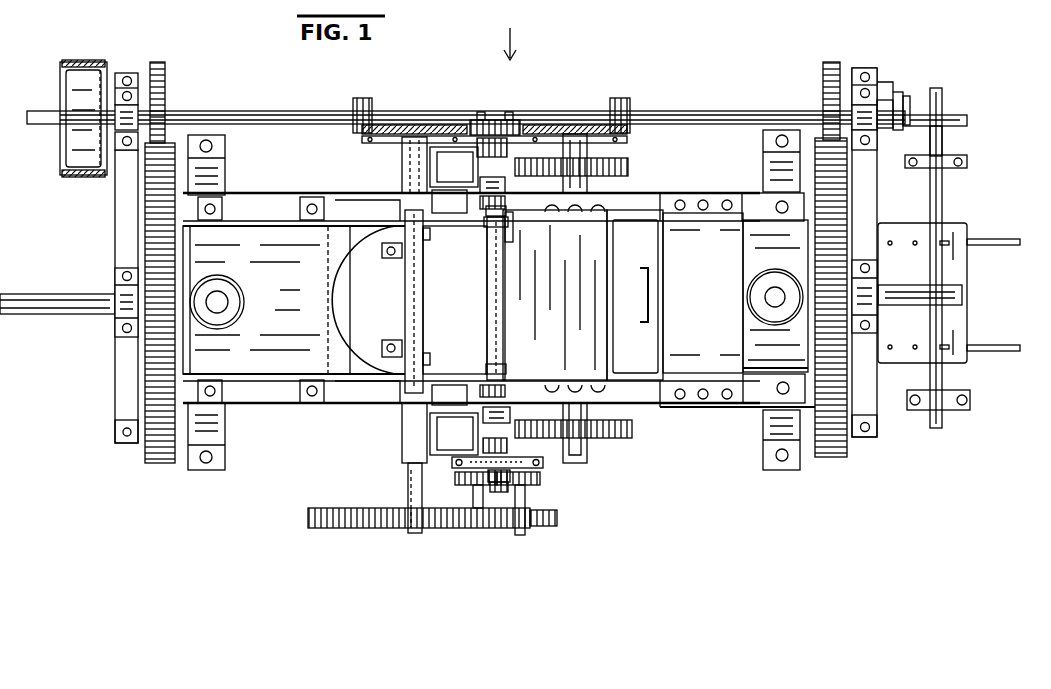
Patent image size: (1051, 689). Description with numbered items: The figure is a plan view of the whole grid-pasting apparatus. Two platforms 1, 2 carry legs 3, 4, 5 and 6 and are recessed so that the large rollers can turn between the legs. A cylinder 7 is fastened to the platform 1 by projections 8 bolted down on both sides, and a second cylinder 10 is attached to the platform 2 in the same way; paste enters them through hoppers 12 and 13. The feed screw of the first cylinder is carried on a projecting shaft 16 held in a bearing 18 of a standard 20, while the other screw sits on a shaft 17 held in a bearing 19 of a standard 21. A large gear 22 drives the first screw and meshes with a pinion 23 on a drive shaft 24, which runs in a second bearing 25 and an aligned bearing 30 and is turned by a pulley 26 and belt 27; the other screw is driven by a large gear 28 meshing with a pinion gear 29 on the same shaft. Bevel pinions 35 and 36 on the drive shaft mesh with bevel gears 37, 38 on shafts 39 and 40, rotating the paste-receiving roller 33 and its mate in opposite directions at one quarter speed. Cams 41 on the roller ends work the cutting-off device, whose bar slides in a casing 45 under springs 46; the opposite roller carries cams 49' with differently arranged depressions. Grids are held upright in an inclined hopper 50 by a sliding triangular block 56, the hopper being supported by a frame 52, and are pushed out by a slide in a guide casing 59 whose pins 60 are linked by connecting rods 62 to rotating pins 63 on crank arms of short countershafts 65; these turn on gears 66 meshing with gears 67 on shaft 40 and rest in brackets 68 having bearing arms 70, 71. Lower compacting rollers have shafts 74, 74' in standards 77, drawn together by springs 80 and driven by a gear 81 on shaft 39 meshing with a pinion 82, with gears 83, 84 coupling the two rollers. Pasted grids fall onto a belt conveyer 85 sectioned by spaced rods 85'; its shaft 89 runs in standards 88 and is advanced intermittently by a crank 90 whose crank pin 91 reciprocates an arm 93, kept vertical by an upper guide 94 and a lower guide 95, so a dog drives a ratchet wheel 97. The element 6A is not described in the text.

The platform 1 is at (272, 205).
The platform 2 is at (752, 410).
The legs 3 is at (225, 155).
The legs 4 is at (402, 145).
The legs 5 is at (588, 183).
The legs 6 is at (770, 166).
The bearing housing 6A is at (480, 201).
The cylinder 7 is at (289, 300).
The projections 8 is at (222, 213).
The second cylinder 10 is at (755, 255).
The hopper 12 is at (222, 280).
The hopper 13 is at (757, 300).
The projecting shaft 16 is at (45, 315).
The shaft 17 is at (955, 290).
The bearing 18 is at (118, 322).
The bearing 19 is at (878, 316).
The standard 20 is at (122, 214).
The standard 21 is at (878, 211).
The large gear 22 is at (152, 409).
The pinion 23 is at (165, 68).
The drive shaft 24 is at (45, 125).
The second bearing 25 is at (133, 105).
The pulley 26 is at (66, 88).
The belt 27 is at (80, 60).
The large gear 28 is at (838, 470).
The pinion gear 29 is at (823, 73).
The bearing 30 is at (868, 100).
The cylindrical roller 33 is at (455, 300).
The bevel pinion 35 is at (362, 98).
The bevel pinion 36 is at (620, 98).
The bevel gear 37 is at (400, 125).
The bevel gear 38 is at (577, 125).
The shaft 39 is at (402, 182).
The shaft 40 is at (580, 143).
The cams 41 is at (355, 206).
The casing 45 is at (420, 262).
The springs 46 is at (430, 234).
The cams 49' is at (565, 295).
The inclined hopper 50 is at (555, 295).
The frame 52 is at (698, 225).
The sliding triangular block 56 is at (635, 295).
The guide casing 59 is at (487, 330).
The pins 60 is at (510, 230).
The connecting rods 62 is at (506, 214).
The rotating pins 63 is at (489, 231).
The countershafts 65 is at (500, 120).
The gears 66 is at (480, 168).
The gears 67 is at (628, 167).
The brackets 68 is at (430, 168).
The arm 70 is at (490, 138).
The arm 71 is at (505, 186).
The shaft 74 is at (468, 528).
The shaft 74' is at (535, 527).
The standards 77 is at (543, 465).
The springs 80 is at (505, 492).
The gear 81 is at (335, 528).
The pinion 82 is at (557, 520).
The gear 83 is at (458, 480).
The gear 84 is at (535, 485).
The belt conveyer 85 is at (922, 293).
The spaced rods 85' is at (996, 280).
The standards 88 is at (967, 162).
The shaft 89 is at (942, 100).
The crank 90 is at (906, 100).
The crank pin 91 is at (900, 96).
The arm 93 is at (888, 130).
The upper guide 94 is at (890, 84).
The lower guide 95 is at (942, 138).
The ratchet wheel 97 is at (967, 120).